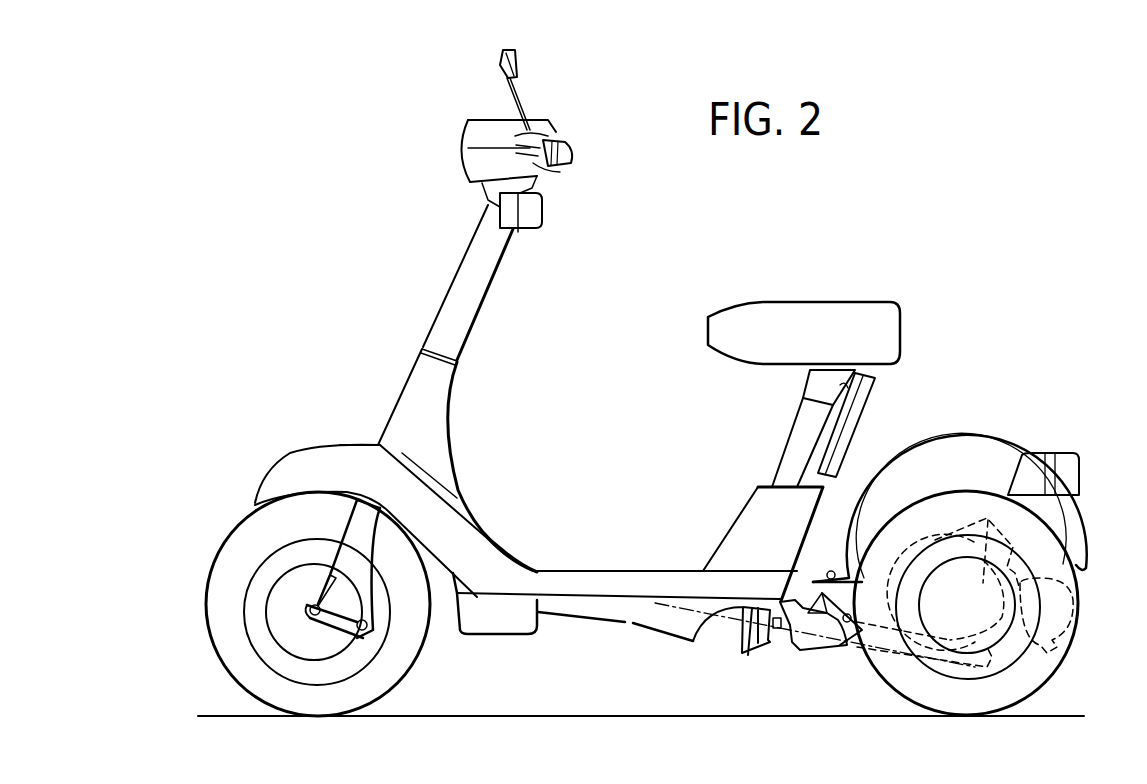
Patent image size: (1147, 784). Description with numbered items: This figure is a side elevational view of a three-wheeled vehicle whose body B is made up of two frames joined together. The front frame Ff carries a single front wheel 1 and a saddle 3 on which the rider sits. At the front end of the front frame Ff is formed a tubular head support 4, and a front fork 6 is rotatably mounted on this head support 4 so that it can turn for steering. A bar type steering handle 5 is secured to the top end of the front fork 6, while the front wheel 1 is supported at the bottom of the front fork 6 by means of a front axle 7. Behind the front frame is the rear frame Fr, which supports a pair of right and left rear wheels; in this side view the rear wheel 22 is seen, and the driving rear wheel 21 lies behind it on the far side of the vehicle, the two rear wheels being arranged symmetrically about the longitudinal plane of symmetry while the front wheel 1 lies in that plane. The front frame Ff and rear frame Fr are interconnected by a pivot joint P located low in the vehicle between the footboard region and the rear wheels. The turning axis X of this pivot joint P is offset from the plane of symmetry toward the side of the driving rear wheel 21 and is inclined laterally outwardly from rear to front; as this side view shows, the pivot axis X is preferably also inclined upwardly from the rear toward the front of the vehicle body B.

The front wheel 1 is at (218, 567).
The saddle 3 is at (887, 327).
The tubular head support 4 is at (412, 390).
The bar type steering handle 5 is at (573, 157).
The front fork 6 is at (354, 530).
The front axle 7 is at (309, 611).
The rear wheel 22 is at (1078, 605).
The driving rear wheel 21 is at (965, 592).
The body B is at (635, 311).
The engine E is at (900, 572).
The pivot joint P is at (725, 632).
The turning axis X is at (673, 608).
The front frame Ff is at (600, 600).
The rear frame Fr is at (827, 637).